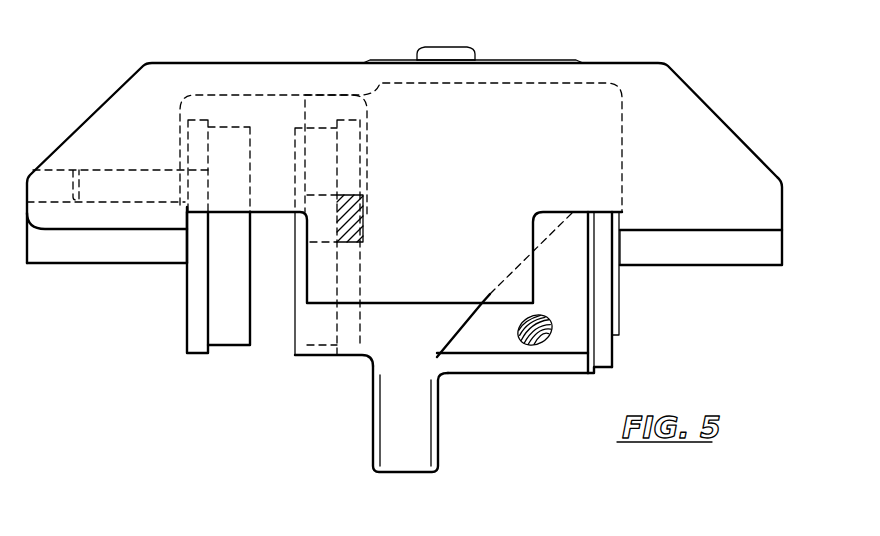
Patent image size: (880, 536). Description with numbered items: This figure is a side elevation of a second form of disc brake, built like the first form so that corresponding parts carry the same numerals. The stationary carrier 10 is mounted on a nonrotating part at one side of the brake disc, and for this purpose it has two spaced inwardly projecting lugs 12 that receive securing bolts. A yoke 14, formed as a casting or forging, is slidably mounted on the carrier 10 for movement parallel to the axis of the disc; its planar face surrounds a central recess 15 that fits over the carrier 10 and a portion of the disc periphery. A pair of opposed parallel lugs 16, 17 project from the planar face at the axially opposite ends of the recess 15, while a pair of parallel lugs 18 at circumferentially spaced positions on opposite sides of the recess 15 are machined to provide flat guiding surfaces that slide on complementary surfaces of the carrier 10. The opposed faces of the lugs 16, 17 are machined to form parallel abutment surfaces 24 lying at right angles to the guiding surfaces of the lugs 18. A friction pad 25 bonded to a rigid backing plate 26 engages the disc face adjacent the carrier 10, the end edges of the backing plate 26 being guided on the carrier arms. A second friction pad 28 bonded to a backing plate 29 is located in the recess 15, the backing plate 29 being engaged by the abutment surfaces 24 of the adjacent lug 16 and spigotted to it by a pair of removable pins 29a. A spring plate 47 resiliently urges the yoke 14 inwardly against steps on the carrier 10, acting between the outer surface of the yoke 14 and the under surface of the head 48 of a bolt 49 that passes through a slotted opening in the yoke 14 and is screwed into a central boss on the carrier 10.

The carrier 10 is at (498, 340).
The lugs 12 is at (403, 458).
The yoke 14 is at (262, 80).
The central recess 15 is at (230, 97).
The lug 16 is at (77, 215).
The lug 17 is at (718, 248).
The lugs 18 is at (437, 288).
The abutment surfaces 24 is at (182, 263).
The friction pad 25 is at (297, 338).
The backing plate 26 is at (345, 352).
The friction pad 28 is at (237, 335).
The backing plate 29 is at (202, 340).
The removable pins 29a is at (117, 183).
The spring plate 47 is at (403, 62).
The head 48 is at (430, 55).
The bolt 49 is at (458, 55).